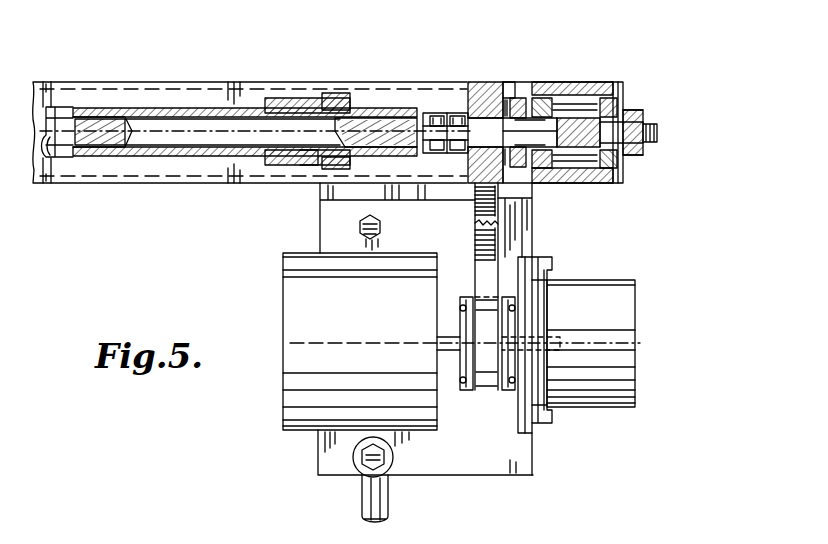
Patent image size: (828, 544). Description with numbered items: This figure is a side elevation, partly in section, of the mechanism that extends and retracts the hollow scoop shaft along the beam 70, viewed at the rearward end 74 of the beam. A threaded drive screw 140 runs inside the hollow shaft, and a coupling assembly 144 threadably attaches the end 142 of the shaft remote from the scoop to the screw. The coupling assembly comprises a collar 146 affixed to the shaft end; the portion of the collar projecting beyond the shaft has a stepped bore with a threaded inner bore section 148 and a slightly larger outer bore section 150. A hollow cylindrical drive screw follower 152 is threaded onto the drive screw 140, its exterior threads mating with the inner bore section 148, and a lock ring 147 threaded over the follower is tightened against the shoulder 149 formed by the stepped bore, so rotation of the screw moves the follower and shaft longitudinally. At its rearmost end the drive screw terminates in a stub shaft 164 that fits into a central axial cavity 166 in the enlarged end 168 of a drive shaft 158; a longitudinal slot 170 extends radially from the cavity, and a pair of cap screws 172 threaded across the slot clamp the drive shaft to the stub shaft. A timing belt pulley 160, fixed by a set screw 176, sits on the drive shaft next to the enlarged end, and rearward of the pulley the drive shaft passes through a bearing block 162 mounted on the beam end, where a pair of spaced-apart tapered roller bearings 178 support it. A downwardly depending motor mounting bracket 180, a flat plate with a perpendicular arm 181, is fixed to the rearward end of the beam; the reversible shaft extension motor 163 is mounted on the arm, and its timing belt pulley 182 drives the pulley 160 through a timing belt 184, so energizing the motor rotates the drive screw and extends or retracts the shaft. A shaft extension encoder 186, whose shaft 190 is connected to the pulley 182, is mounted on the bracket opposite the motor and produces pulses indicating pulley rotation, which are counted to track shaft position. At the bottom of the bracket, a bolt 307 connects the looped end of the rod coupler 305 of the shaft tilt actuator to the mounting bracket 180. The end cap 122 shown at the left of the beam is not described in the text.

The beam 70 is at (163, 82).
The end cap 122 is at (60, 138).
The end of the shaft 142 is at (230, 162).
The coupling assembly 144 is at (297, 86).
The lock ring 147 is at (334, 97).
The collar 146 is at (270, 168).
The inner bore section 148 is at (300, 170).
The shoulder 149 is at (318, 166).
The drive screw 140 is at (362, 111).
The drive screw follower 152 is at (390, 112).
The longitudinal slot 170 is at (445, 125).
The enlarged end 168 is at (455, 112).
The cap screws 172 is at (442, 157).
The timing belt pulley 160 is at (485, 98).
The drive shaft 158 is at (507, 82).
The set screw 176 is at (522, 98).
The rearward end 74 is at (556, 82).
The bearing block 162 is at (583, 89).
The tapered roller bearings 178 is at (594, 163).
The central axial cavity 166 is at (612, 84).
The stub shaft 164 is at (478, 201).
The timing belt 184 is at (493, 234).
The arm 181 is at (532, 253).
The timing belt pulley 182 is at (507, 300).
The shaft extension motor 163 is at (628, 306).
The shaft extension encoder 186 is at (380, 323).
The shaft 190 is at (450, 355).
The motor mounting bracket 180 is at (498, 456).
The outer bore section 150 is at (362, 172).
The bolt 307 is at (358, 463).
The coupler 305 is at (388, 493).